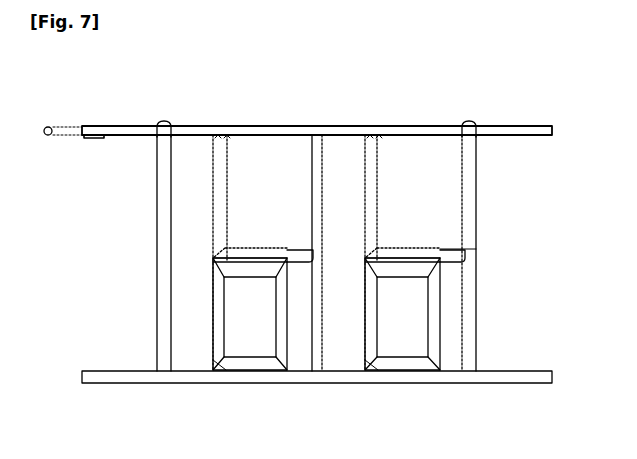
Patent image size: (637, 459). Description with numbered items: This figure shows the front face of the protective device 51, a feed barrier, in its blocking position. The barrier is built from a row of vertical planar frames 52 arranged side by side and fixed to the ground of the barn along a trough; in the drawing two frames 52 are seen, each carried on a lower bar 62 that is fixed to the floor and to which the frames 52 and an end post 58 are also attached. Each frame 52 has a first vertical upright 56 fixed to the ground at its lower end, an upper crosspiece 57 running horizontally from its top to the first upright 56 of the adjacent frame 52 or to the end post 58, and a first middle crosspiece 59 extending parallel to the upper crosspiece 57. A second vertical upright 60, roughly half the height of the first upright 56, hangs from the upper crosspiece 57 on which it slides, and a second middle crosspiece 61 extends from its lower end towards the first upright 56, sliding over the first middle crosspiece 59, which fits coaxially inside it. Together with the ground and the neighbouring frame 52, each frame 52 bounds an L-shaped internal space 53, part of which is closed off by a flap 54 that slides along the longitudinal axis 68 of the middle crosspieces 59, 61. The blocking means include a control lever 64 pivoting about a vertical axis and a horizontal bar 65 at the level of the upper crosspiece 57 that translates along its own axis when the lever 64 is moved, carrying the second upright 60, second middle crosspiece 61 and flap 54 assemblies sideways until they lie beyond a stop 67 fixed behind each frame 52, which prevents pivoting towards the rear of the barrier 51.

The protective device 51 is at (529, 77).
The vertical planar frame 52 is at (195, 147).
The L-shaped internal space 53 is at (177, 327).
The flap 54 is at (250, 368).
The first vertical upright 56 is at (166, 276).
The upper crosspiece 57 is at (180, 124).
The end post 58 is at (468, 178).
The first middle crosspiece 59 is at (300, 260).
The second vertical upright 60 is at (222, 205).
The second middle crosspiece 61 is at (248, 258).
The lower bar 62 is at (546, 371).
The control lever 64 is at (70, 127).
The horizontal bar 65 is at (140, 127).
The stop 67 is at (213, 360).
The longitudinal axis 68 is at (478, 252).